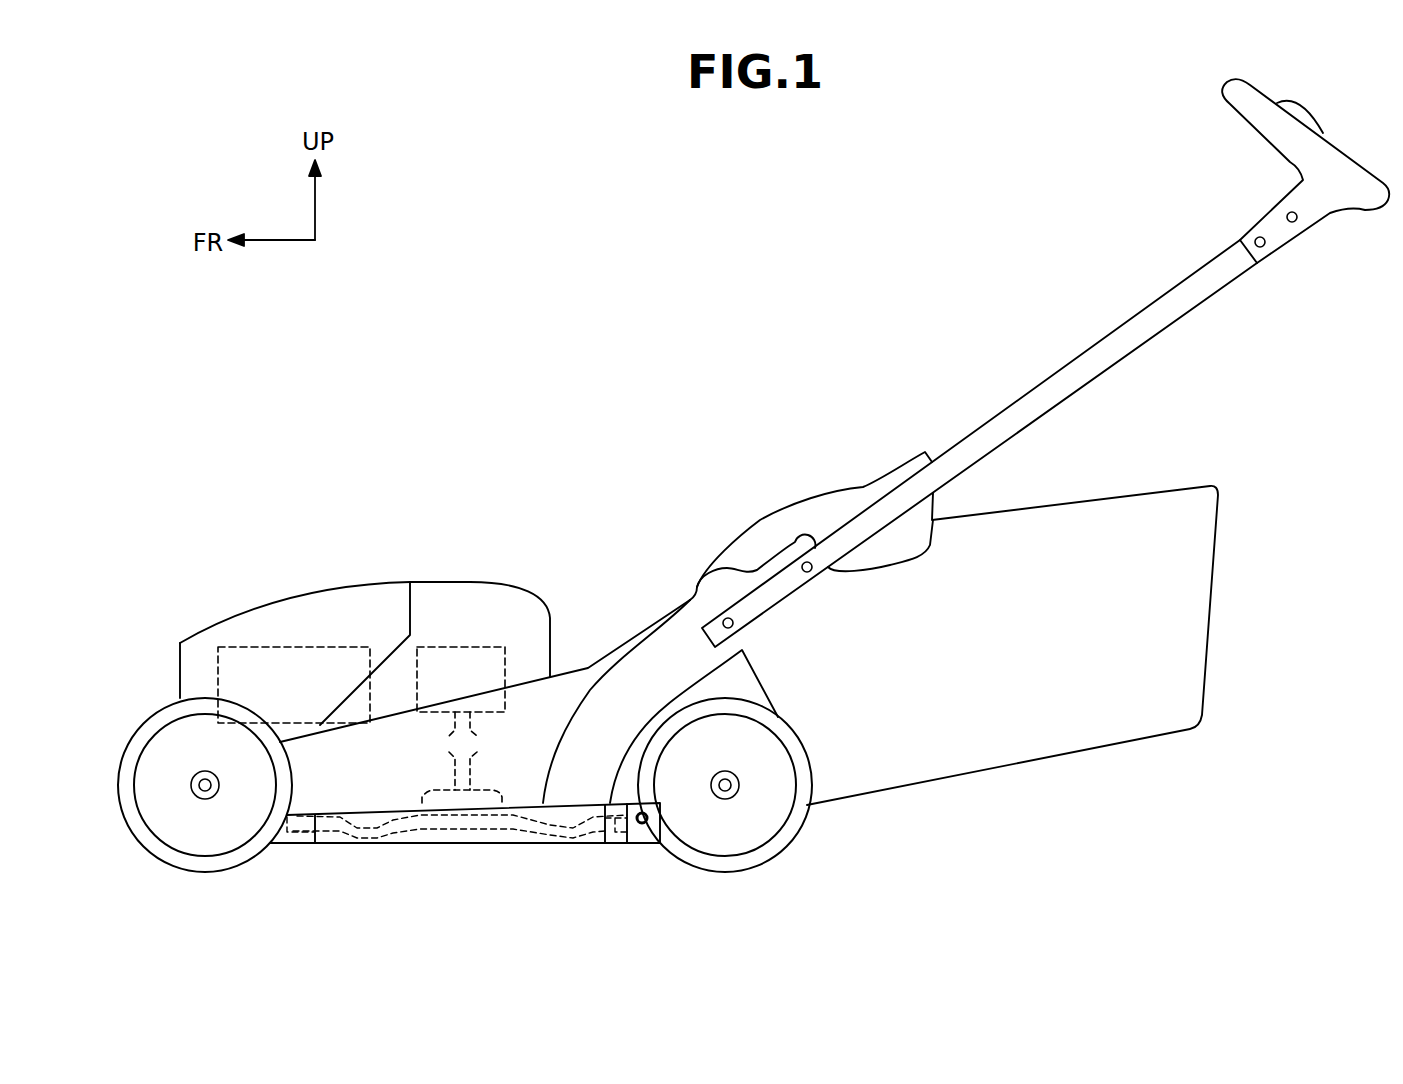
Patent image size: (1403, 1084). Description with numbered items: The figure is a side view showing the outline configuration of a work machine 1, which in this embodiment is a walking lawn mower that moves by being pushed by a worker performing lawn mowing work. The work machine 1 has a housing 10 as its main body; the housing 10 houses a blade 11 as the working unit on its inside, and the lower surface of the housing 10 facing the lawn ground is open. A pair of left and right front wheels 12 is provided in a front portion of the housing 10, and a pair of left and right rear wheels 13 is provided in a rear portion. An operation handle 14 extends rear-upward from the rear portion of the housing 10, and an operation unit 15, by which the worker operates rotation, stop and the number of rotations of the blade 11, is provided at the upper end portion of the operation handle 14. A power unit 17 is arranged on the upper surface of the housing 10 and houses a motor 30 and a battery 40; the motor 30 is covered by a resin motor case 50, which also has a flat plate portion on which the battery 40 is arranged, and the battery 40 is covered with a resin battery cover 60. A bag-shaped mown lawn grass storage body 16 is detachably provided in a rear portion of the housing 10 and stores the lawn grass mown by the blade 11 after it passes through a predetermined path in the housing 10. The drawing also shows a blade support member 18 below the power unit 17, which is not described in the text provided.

The work machine 1 is at (600, 222).
The housing 10 is at (588, 656).
The blade 11 is at (573, 830).
The front wheels 12 is at (163, 862).
The rear wheels 13 is at (717, 872).
The operation handle 14 is at (1150, 303).
The operation unit 15 is at (1310, 112).
The mown lawn grass storage body 16 is at (1202, 663).
The power unit 17 is at (406, 568).
The blade holder 18 is at (453, 768).
The motor 30 is at (475, 673).
The battery 40 is at (312, 680).
The motor case 50 is at (453, 582).
The battery cover 60 is at (270, 603).